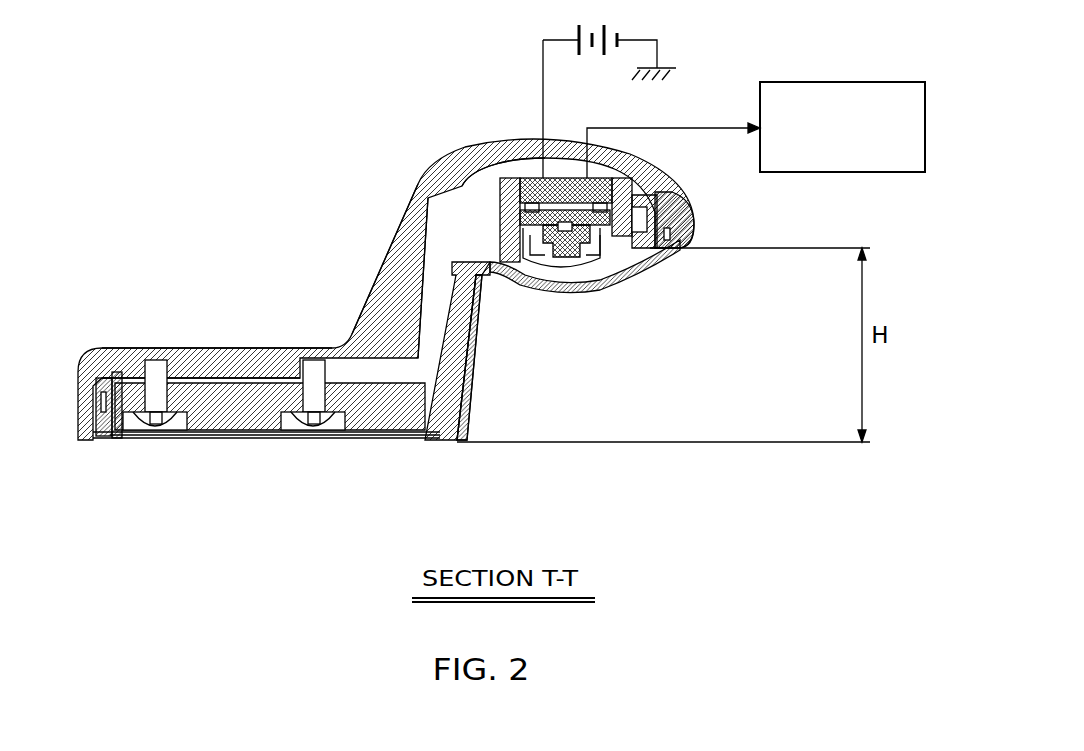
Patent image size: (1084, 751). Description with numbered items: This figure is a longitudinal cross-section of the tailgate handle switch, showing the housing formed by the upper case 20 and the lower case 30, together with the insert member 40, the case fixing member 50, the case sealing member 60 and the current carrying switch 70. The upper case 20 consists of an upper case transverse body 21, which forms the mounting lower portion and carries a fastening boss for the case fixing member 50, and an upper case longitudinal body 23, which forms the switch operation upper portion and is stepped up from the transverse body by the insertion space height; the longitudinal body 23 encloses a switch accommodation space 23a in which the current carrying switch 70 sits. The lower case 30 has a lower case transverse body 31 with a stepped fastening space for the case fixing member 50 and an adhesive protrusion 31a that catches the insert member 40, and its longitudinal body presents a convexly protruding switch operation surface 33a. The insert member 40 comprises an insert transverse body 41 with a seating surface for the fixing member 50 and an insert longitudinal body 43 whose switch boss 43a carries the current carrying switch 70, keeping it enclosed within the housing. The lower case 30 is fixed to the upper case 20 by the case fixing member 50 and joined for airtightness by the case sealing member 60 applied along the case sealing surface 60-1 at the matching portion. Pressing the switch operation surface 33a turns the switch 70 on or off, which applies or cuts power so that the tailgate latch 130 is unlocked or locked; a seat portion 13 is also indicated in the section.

The upper case 20 is at (378, 108).
The upper case transverse body 21 is at (215, 348).
The upper case longitudinal body 23 is at (395, 238).
The switch accommodation space 23a is at (465, 195).
The case sealing member 60 is at (100, 345).
The case sealing surface 60-1 is at (123, 343).
The current carrying switch 70 is at (570, 212).
The tailgate latch 130 is at (840, 82).
The housing seat 13 is at (647, 258).
The switch operation surface 33a is at (600, 284).
The adhesive protrusion 31a is at (480, 320).
The lower case transverse body 31 is at (462, 380).
The lower case 30 is at (758, 275).
The case fixing member 50 is at (297, 433).
The insert transverse body 41 is at (343, 440).
The switch boss 43a is at (437, 250).
The insert longitudinal body 43 is at (420, 432).
The insert member 40 is at (415, 515).